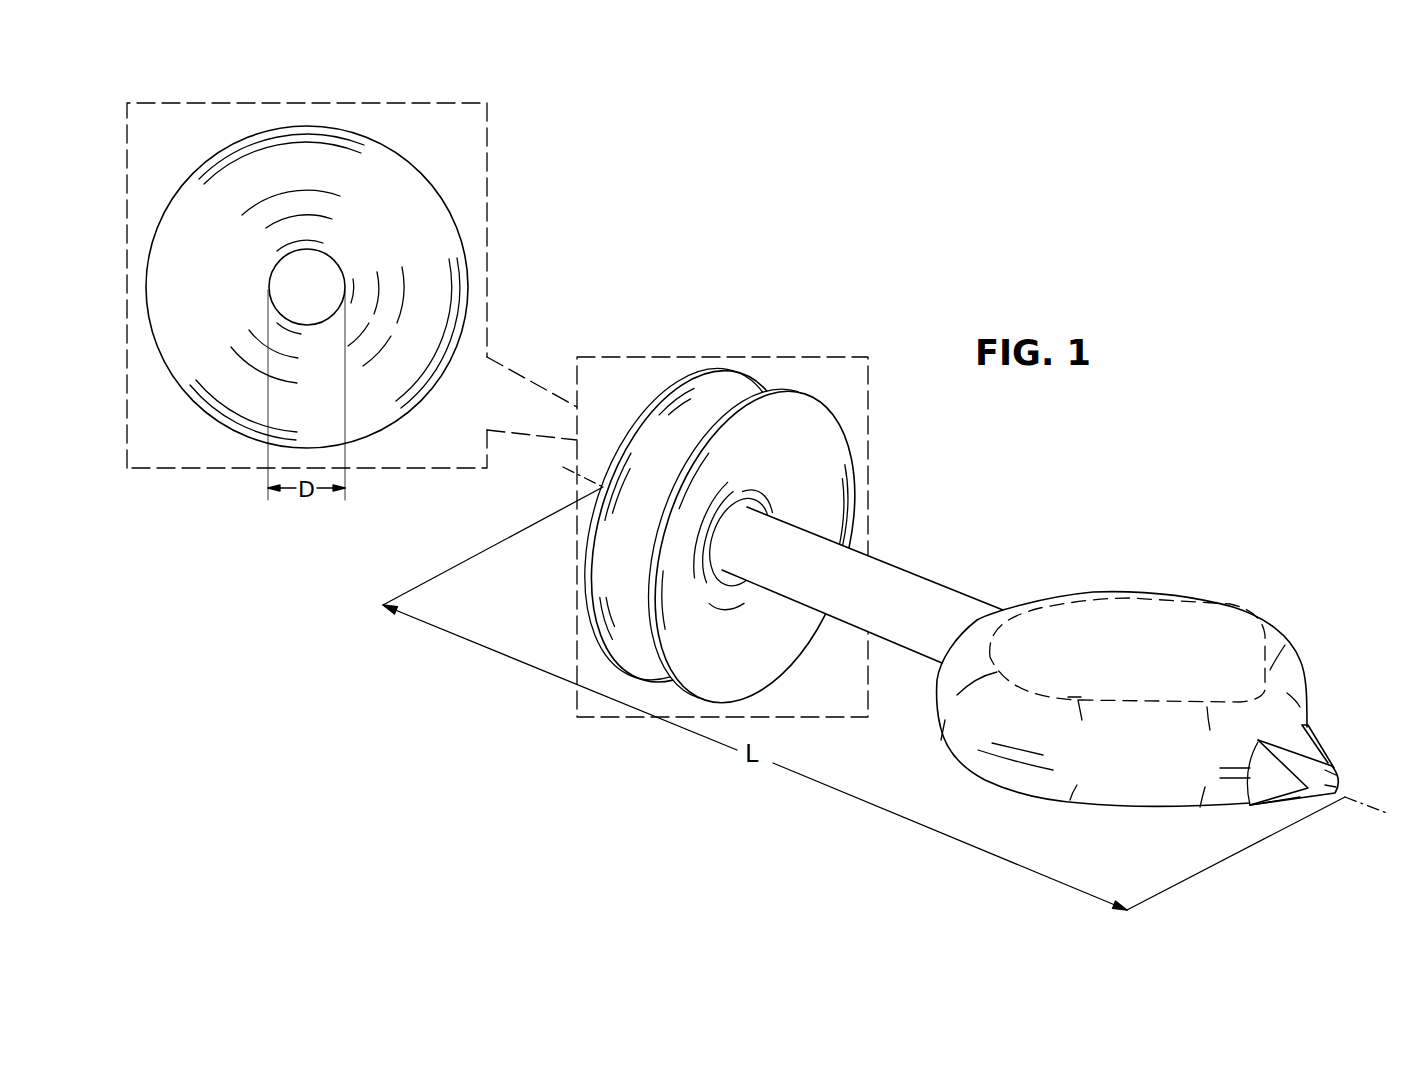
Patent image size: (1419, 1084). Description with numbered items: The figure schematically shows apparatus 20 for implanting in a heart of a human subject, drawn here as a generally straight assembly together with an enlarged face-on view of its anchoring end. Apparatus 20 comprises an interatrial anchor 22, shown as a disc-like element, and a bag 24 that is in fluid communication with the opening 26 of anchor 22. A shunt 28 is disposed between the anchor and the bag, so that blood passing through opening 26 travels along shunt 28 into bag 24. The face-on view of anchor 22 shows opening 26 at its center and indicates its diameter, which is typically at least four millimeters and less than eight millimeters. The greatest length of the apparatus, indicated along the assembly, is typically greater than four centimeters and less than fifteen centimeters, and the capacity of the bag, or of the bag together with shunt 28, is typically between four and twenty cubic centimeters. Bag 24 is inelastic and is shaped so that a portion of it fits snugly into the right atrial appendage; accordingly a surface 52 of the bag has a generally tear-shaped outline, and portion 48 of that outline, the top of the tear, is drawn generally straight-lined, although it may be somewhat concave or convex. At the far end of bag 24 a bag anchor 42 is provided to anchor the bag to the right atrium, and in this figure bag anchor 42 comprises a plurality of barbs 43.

The apparatus 20 is at (1190, 497).
The interatrial anchor 22 is at (467, 283).
The bag 24 is at (1233, 605).
The opening 26 is at (326, 300).
The shunt 28 is at (928, 582).
The bag anchor 42 is at (1333, 768).
The barbs 43 is at (1302, 797).
The portion of the outline 48 is at (1280, 668).
The surface of the bag 52 is at (1137, 630).